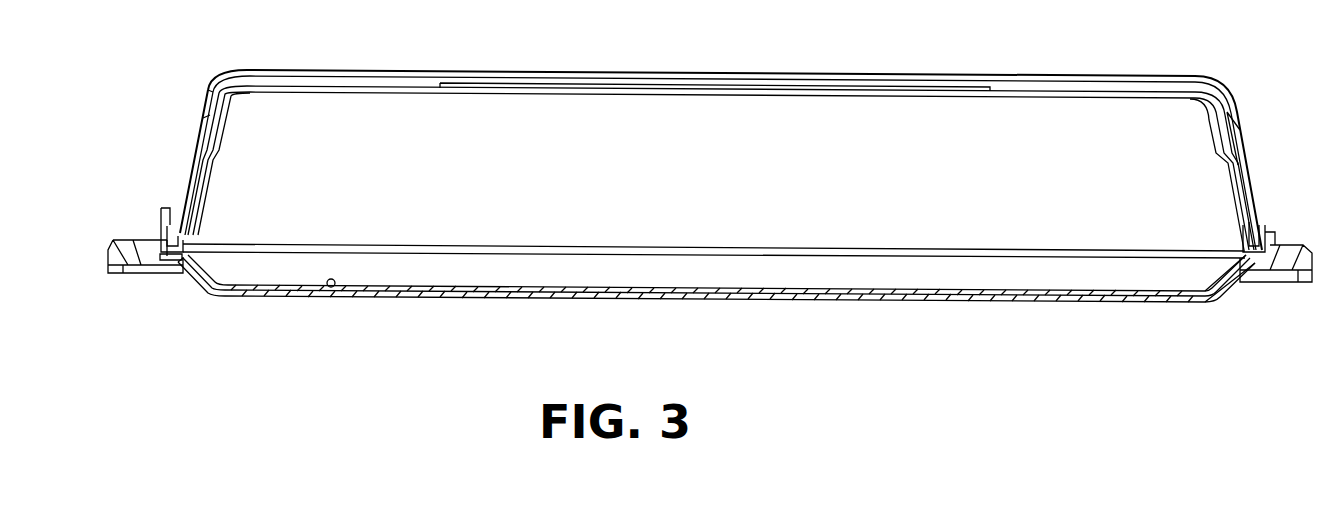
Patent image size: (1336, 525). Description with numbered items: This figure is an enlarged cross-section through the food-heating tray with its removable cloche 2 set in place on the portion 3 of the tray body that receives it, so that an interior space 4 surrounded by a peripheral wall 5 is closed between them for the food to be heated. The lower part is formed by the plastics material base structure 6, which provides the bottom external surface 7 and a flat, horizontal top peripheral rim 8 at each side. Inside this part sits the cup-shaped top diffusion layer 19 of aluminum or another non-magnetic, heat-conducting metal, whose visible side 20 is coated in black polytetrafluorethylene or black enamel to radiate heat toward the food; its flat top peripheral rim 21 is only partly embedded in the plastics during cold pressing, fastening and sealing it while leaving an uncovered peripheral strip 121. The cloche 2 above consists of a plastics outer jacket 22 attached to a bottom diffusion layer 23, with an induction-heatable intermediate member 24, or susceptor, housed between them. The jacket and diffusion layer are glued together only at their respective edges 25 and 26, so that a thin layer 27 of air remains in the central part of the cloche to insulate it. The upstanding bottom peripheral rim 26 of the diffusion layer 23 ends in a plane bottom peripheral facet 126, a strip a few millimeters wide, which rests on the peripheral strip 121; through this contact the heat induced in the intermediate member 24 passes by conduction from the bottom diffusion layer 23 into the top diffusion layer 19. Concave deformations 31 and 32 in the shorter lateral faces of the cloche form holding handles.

The cloche 2 is at (601, 68).
The portion of the tray receiving the cloche 3 is at (388, 300).
The interior space 4 is at (418, 110).
The peripheral wall 5 is at (206, 88).
The base structure 6 is at (538, 302).
The bottom external surface 7 is at (654, 310).
The top peripheral rim 8 is at (123, 240).
The top diffusion layer 19 is at (330, 290).
The visible side of the top diffusion layer 20 is at (780, 280).
The flat top peripheral rim of the diffusion layer 21 is at (150, 270).
The outer jacket 22 is at (514, 82).
The bottom diffusion layer 23 is at (326, 100).
The intermediate member 24 is at (675, 82).
The edge of the outer jacket 25 is at (175, 210).
The upstanding bottom peripheral rim of the diffusion layer 26 is at (157, 236).
The thin layer of air 27 is at (300, 84).
The concave deformation 31 is at (1237, 128).
The concave deformation 32 is at (193, 125).
The peripheral strip 121 is at (1268, 240).
The bottom peripheral facet 126 is at (176, 268).